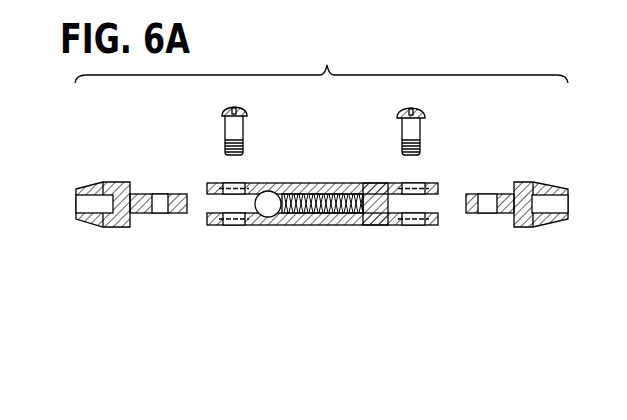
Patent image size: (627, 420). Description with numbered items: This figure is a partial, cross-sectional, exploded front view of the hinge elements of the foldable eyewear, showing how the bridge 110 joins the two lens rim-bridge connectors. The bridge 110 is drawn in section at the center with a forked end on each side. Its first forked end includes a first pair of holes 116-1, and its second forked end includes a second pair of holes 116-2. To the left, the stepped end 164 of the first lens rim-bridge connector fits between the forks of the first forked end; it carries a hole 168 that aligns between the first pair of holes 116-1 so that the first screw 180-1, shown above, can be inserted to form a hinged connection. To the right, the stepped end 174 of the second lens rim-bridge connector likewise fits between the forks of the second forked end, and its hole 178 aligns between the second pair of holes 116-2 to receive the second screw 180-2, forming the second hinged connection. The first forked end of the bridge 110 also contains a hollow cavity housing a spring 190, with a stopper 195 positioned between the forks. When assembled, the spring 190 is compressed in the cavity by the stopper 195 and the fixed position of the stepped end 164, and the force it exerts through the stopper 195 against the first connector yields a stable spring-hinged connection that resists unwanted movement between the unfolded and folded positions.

The bridge 110 is at (332, 233).
The first pair of holes 116-1 is at (234, 230).
The second pair of holes 116-2 is at (410, 230).
The stepped end 164 is at (123, 233).
The hole 168 is at (159, 202).
The stepped end 174 is at (521, 233).
The hole 178 is at (491, 196).
The first screw 180-1 is at (247, 123).
The second screw 180-2 is at (425, 128).
The spring 190 is at (310, 183).
The stopper 195 is at (270, 209).